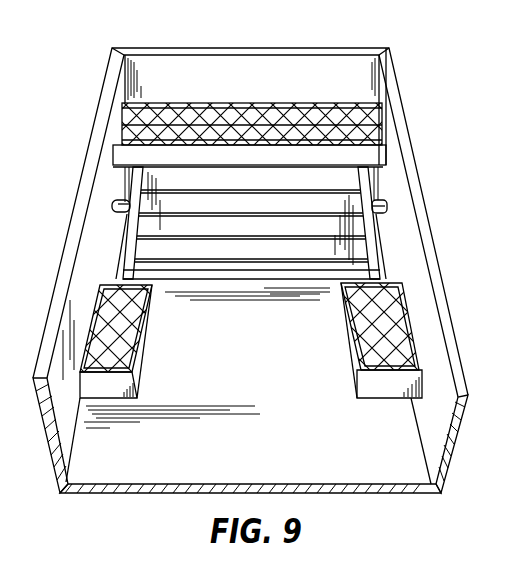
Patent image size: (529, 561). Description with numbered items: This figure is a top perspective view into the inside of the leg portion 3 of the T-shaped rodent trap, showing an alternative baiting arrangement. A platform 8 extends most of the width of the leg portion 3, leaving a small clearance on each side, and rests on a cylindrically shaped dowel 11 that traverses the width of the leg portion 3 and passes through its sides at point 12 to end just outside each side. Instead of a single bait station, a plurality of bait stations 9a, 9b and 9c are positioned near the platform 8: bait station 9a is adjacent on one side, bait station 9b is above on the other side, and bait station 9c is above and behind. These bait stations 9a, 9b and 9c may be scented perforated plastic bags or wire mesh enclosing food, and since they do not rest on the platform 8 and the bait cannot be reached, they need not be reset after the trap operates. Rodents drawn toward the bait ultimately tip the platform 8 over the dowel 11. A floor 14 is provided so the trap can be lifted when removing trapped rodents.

The leg portion 3 is at (88, 238).
The platform 8 is at (366, 246).
The bait station 9a is at (92, 332).
The bait station 9b is at (404, 325).
The bait station 9c is at (245, 103).
The dowel 11 is at (112, 206).
The point 12 is at (388, 211).
The floor 14 is at (252, 458).